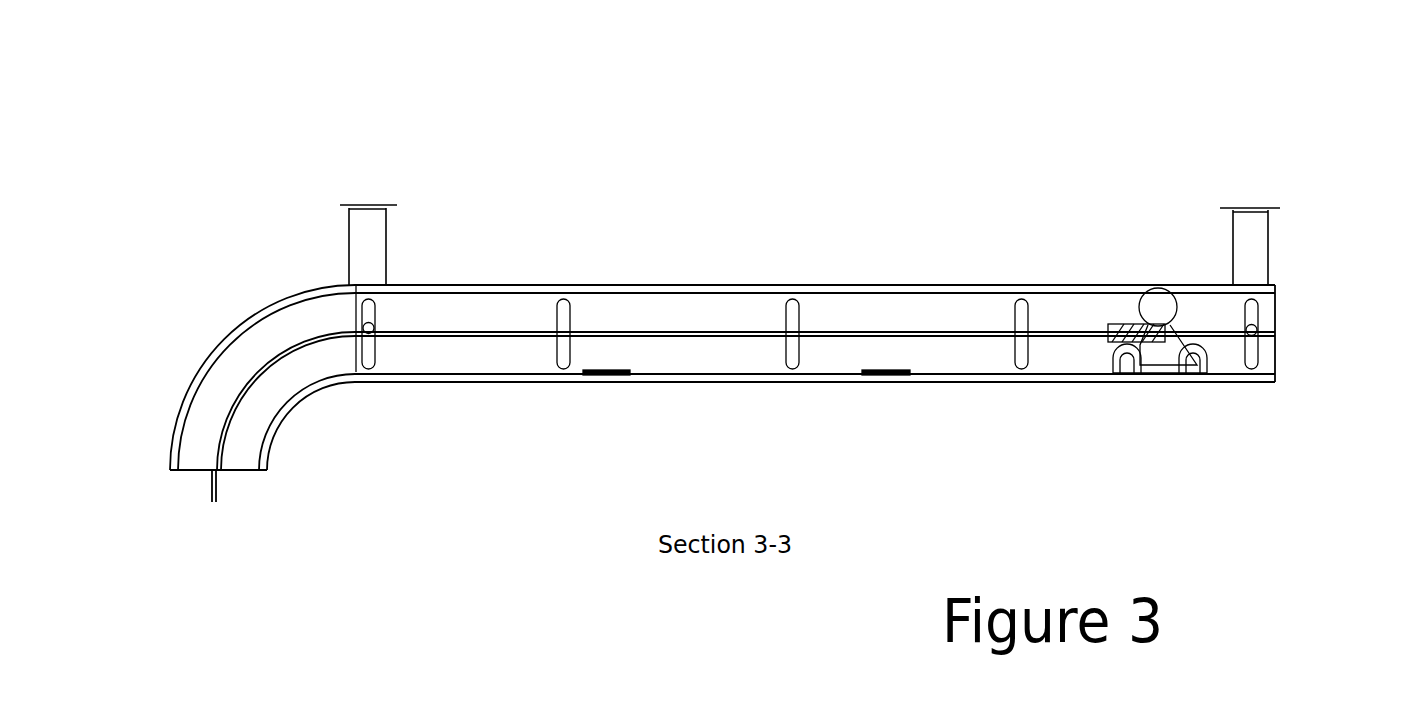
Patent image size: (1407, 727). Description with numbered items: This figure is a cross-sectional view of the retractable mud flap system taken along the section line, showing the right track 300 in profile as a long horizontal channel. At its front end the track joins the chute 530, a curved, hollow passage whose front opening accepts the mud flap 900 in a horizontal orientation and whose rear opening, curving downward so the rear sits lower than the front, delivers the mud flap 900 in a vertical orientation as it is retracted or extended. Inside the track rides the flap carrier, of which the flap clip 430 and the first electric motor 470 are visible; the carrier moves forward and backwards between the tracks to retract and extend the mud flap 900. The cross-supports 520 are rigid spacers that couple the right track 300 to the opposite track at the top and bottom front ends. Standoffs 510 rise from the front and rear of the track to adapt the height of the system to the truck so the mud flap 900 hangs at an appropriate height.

The right track 300 is at (748, 357).
The flap clip 430 is at (1123, 327).
The first electric motor 470 is at (1162, 288).
The standoffs 510 is at (378, 242).
The cross-supports 520 is at (615, 370).
The chute 530 is at (218, 343).
The mud flap 900 is at (247, 388).